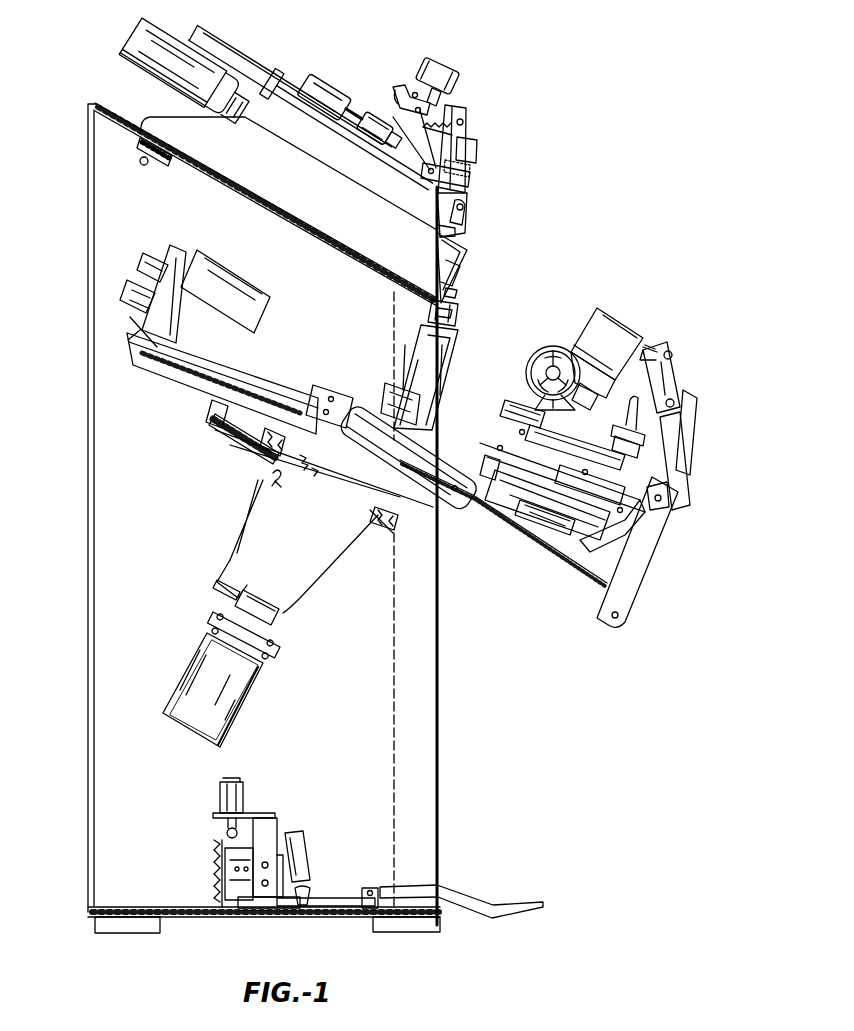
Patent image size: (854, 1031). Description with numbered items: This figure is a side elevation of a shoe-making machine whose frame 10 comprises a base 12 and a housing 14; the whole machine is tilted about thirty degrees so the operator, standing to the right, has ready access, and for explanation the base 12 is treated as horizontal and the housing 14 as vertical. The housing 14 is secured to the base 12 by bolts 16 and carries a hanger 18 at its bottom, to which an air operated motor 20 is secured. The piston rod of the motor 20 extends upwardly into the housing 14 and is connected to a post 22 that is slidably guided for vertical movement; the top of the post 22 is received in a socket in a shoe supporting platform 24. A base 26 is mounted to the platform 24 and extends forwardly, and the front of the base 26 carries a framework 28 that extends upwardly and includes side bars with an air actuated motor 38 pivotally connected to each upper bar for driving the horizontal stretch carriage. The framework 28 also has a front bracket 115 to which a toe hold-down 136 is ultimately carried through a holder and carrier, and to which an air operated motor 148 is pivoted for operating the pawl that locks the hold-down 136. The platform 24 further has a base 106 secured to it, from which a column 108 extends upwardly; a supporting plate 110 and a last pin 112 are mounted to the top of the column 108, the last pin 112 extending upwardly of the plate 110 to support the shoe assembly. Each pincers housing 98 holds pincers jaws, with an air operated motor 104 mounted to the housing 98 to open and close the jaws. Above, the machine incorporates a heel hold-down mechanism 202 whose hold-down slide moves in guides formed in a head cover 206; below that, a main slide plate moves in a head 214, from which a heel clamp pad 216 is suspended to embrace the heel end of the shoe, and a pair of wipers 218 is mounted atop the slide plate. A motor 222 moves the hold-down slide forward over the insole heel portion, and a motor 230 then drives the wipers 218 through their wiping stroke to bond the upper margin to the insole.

The frame 10 is at (88, 538).
The base 12 is at (243, 444).
The housing 14 is at (325, 560).
The bolts 16 is at (270, 435).
The hanger 18 is at (278, 652).
The air operated motor 20 is at (220, 707).
The post 22 is at (357, 470).
The shoe supporting platform 24 is at (242, 388).
The base 26 is at (511, 520).
The framework 28 is at (683, 535).
The air actuated motor 38 is at (583, 447).
The pincers housing 98 is at (613, 328).
The air operated motor 104 is at (590, 375).
The base 106 is at (398, 393).
The column 108 is at (435, 348).
The supporting plate 110 is at (452, 316).
The last pin 112 is at (454, 294).
The front bracket 115 is at (640, 578).
The toe hold-down 136 is at (653, 342).
The air operated motor 148 is at (660, 493).
The heel hold-down mechanism 202 is at (503, 157).
The head cover 206 is at (352, 157).
The head 214 is at (322, 199).
The heel clamp pad 216 is at (452, 256).
The wipers 218 is at (448, 237).
The motor 222 is at (233, 46).
The motor 230 is at (135, 48).